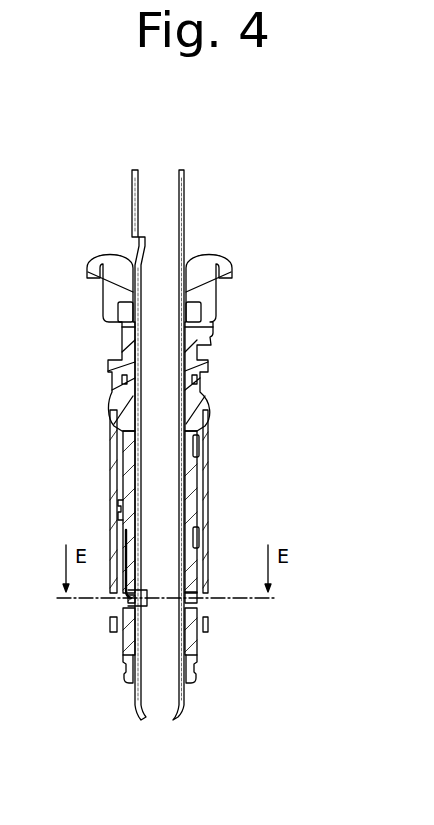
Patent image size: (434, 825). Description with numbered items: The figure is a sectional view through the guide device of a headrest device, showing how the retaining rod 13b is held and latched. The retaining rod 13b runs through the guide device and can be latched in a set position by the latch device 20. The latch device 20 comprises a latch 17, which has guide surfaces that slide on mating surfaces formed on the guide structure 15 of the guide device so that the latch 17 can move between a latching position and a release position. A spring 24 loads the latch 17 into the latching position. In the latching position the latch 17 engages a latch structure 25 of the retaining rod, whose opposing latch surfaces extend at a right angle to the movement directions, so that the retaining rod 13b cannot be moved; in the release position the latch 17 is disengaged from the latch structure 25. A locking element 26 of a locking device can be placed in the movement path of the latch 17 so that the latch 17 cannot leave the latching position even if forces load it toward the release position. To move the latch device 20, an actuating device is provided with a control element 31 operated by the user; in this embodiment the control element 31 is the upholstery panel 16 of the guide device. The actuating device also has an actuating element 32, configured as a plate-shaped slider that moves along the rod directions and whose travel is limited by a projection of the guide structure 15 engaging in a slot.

The retaining rod 13b is at (183, 212).
The upholstery panel 16 is at (113, 263).
The control element 31 is at (236, 250).
The guide structure 15 is at (197, 472).
The actuating element 32 is at (199, 541).
The spring 24 is at (123, 542).
The latch structure 25 is at (150, 589).
The latch 17 is at (132, 605).
The locking element 26 is at (193, 612).
The latch device 20 is at (112, 603).